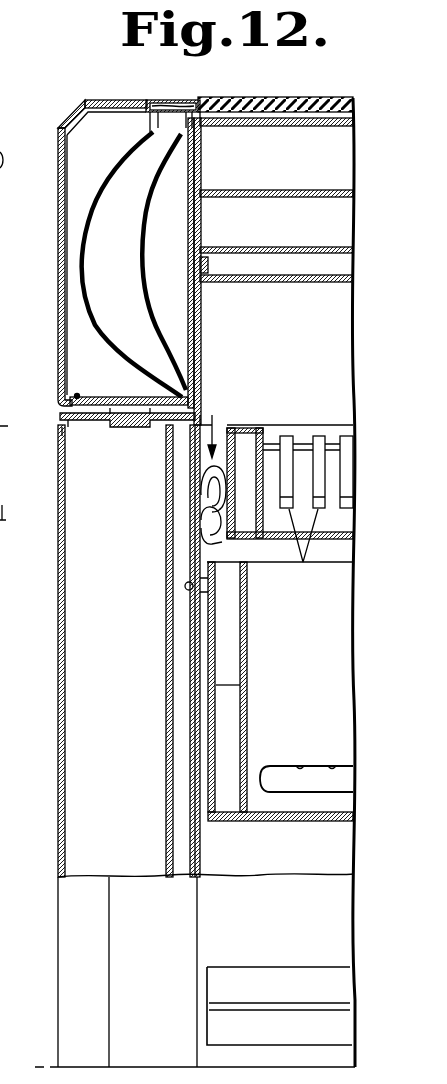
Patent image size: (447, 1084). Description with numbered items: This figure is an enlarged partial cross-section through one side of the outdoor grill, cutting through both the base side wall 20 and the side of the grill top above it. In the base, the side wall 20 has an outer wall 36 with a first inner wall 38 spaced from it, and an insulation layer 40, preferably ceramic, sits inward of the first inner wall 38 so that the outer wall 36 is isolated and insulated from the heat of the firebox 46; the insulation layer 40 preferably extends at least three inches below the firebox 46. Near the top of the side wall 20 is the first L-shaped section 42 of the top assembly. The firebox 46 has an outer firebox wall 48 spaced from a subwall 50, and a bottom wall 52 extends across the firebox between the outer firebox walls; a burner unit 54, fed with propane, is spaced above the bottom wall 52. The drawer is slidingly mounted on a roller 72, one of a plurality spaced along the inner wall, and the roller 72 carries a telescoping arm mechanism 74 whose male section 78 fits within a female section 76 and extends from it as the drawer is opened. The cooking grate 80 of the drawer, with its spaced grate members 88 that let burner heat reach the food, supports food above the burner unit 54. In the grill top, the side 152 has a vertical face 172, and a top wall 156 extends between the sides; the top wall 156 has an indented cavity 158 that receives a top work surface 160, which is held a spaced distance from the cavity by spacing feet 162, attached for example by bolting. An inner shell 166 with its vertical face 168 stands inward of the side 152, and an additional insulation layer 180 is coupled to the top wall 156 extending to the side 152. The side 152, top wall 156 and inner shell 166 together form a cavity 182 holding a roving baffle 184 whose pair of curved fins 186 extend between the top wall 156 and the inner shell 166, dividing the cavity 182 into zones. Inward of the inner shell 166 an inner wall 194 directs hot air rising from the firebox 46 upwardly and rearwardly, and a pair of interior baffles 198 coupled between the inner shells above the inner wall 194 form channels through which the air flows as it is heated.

The side wall 20 is at (58, 641).
The outer wall 36 is at (58, 718).
The first inner wall 38 is at (166, 786).
The insulation layer 40 is at (200, 854).
The first L-shaped section 42 is at (190, 852).
The firebox 46 is at (340, 822).
The outer firebox wall 48 is at (240, 685).
The subwall 50 is at (247, 652).
The bottom wall 52 is at (325, 821).
The burner unit 54 is at (316, 766).
The roller 72 is at (201, 493).
The telescoping arm mechanism 74 is at (212, 425).
The female section 76 is at (201, 547).
The male section 78 is at (201, 516).
The cooking grate 80 is at (318, 436).
The grate members 88 is at (303, 549).
The side 152 is at (58, 361).
The top wall 156 is at (99, 100).
The indented cavity 158 is at (158, 100).
The top work surface 160 is at (293, 97).
The spacing feet 162 is at (307, 126).
The inner shell 166 is at (204, 364).
The vertical face 168 is at (204, 335).
The vertical face 172 is at (62, 396).
The insulation layer 180 is at (80, 133).
The cavity 182 is at (66, 181).
The roving baffle 184 is at (110, 190).
The curved fins 186 is at (85, 254).
The inner wall 194 is at (289, 284).
The interior baffles 198 is at (284, 198).